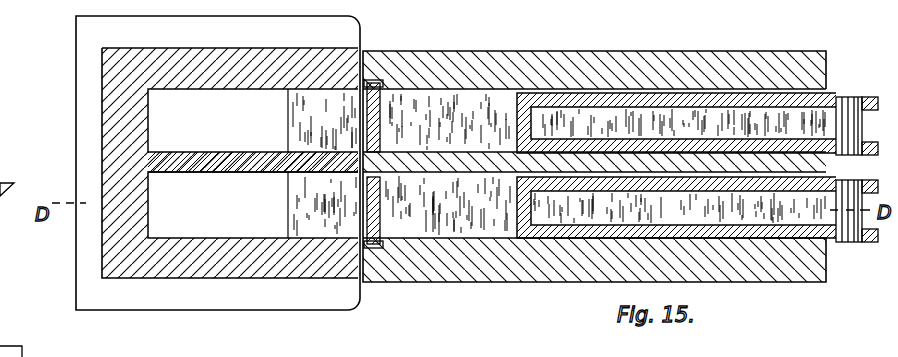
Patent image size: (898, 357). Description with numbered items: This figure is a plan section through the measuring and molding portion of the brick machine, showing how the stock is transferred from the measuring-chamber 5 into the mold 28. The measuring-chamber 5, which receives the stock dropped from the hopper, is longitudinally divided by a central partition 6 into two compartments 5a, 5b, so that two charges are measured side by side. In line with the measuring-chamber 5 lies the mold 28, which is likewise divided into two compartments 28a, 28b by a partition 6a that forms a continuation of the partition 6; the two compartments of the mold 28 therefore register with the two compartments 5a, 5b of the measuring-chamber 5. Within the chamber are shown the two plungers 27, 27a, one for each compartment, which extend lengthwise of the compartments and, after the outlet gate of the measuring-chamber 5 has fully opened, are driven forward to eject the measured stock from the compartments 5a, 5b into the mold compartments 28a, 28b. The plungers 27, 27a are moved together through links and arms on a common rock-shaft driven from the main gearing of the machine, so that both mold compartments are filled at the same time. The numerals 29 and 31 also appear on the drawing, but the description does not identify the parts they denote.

The measuring-chamber 5 is at (594, 155).
The measuring-chamber compartment 5a is at (385, 212).
The measuring-chamber compartment 5b is at (385, 116).
The central partition 6 is at (594, 154).
The partition 6a is at (223, 179).
The plunger 27 is at (697, 209).
The plunger 27a is at (697, 124).
The mold 28 is at (230, 175).
The mold compartment 28a is at (260, 206).
The mold compartment 28b is at (271, 121).
The lead 29 is at (0, 334).
The partition 31 is at (288, 140).